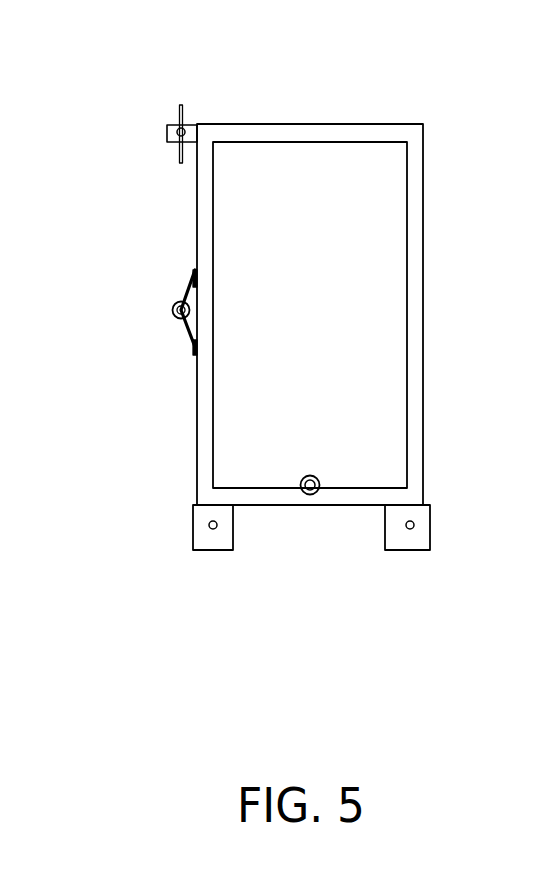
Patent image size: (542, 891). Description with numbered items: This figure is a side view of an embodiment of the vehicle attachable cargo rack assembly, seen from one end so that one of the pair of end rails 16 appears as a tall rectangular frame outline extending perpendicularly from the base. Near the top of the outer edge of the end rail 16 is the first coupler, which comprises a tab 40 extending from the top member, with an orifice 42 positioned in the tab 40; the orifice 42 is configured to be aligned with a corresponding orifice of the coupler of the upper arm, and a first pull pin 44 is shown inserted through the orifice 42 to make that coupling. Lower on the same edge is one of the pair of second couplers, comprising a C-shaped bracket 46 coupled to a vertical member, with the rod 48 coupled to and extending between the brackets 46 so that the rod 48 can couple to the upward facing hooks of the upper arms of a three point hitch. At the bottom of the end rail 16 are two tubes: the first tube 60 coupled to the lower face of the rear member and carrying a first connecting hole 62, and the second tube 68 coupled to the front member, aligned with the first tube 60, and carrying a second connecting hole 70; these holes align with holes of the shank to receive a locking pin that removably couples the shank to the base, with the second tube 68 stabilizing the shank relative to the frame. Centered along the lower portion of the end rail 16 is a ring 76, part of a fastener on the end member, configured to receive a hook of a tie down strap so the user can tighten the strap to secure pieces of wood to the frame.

The end rail 16 is at (212, 210).
The tab 40 is at (167, 135).
The orifice 42 is at (177, 129).
The first pull pin 44 is at (181, 108).
The bracket 46 is at (183, 332).
The rod 48 is at (174, 303).
The first tube 60 is at (430, 530).
The first connecting hole 62 is at (411, 529).
The second tube 68 is at (194, 551).
The second connecting hole 70 is at (214, 529).
The ring 76 is at (313, 495).